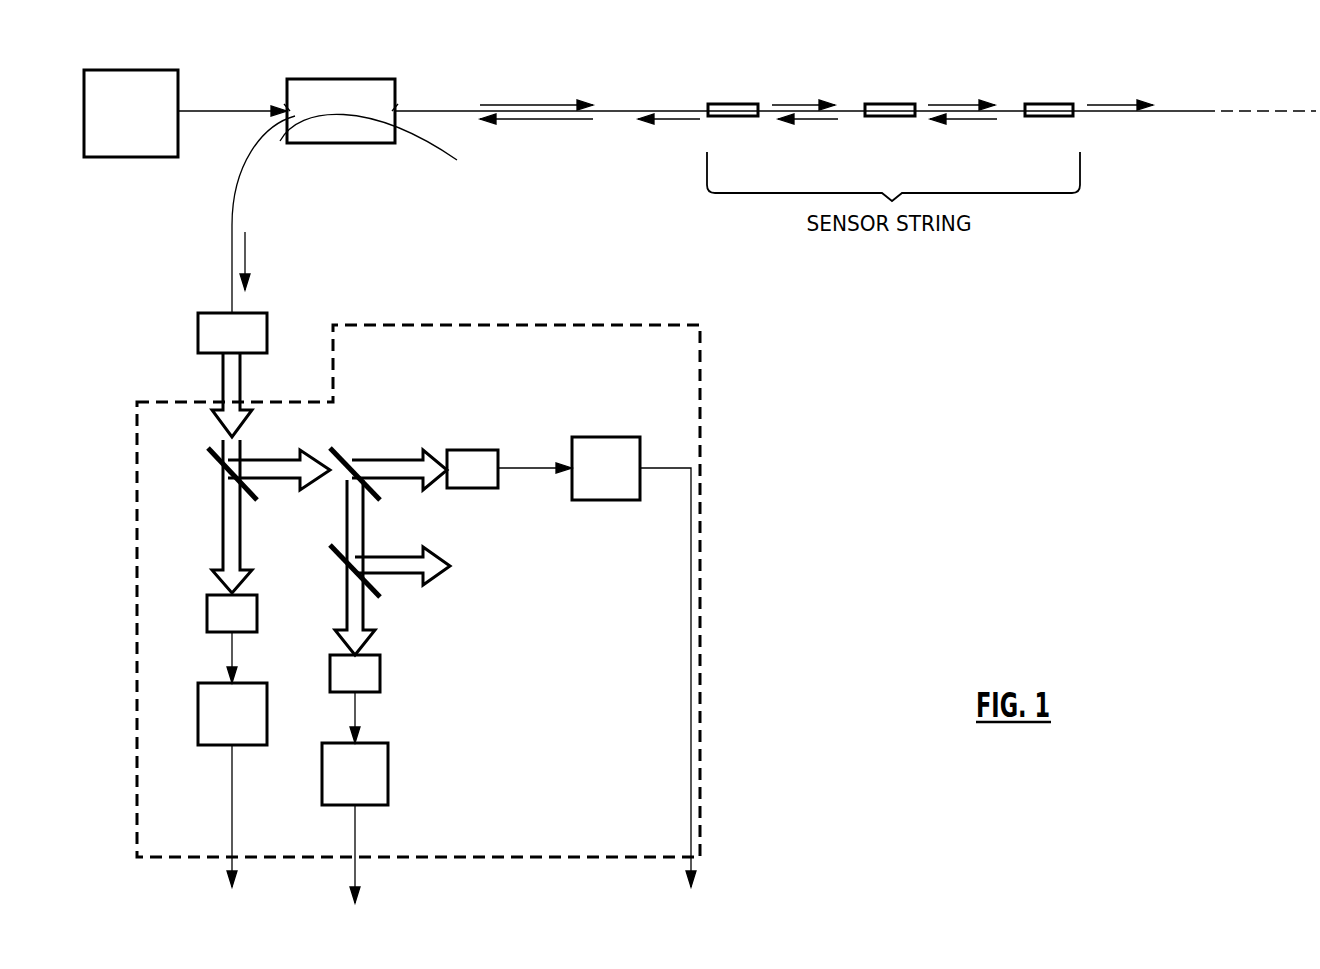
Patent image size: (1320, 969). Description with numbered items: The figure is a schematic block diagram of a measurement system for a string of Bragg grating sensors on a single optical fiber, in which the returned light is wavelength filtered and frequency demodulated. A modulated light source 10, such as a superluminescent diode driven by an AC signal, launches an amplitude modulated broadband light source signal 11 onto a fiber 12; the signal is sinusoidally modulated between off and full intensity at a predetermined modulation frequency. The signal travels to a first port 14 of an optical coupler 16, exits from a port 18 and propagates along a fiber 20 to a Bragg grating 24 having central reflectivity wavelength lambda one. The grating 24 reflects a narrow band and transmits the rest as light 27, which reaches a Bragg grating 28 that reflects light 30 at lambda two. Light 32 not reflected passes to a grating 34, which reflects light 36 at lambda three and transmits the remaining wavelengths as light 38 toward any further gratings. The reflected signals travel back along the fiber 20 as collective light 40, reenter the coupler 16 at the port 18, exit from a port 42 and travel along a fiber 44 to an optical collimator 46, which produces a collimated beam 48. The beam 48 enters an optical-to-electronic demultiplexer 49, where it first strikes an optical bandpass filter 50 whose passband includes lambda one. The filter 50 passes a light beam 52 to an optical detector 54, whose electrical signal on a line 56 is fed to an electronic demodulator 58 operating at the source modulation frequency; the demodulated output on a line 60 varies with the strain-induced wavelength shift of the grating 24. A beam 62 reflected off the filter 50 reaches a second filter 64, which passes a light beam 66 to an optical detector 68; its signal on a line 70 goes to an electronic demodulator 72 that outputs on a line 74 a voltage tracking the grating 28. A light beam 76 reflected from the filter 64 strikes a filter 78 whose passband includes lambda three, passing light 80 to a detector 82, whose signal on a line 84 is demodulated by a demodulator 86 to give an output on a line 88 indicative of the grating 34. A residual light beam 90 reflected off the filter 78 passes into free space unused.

The modulated light source 10 is at (132, 158).
The modulated broadband light source signal 11 is at (528, 104).
The optical fiber 12 is at (239, 108).
The first port 14 is at (287, 108).
The optical coupler 16 is at (364, 144).
The port 18 is at (397, 109).
The fiber 20 is at (423, 110).
The Bragg grating 24 is at (746, 104).
The transmitted light 27 is at (794, 104).
The Bragg grating 28 is at (890, 104).
The reflected light 30 is at (822, 121).
The transmitted light 32 is at (953, 104).
The Bragg grating 34 is at (1053, 104).
The reflected light 36 is at (977, 121).
The transmitted light 38 is at (1113, 104).
The reflected light 40 is at (558, 121).
The port 42 is at (280, 137).
The fiber 44 is at (233, 208).
The optical collimator 46 is at (198, 338).
The collimated beam 48 is at (223, 391).
The optical-to-electronic demultiplexer 49 is at (478, 338).
The optical bandpass filter 50 is at (210, 452).
The collimated light beam 52 is at (222, 538).
The optical detector 54 is at (207, 602).
The line 56 is at (231, 659).
The electronic demodulator 58 is at (208, 746).
The line 60 is at (232, 820).
The beam 62 is at (300, 458).
The second filter 64 is at (336, 450).
The light beam 66 is at (683, 121).
The optical detector 68 is at (477, 450).
The line 70 is at (530, 469).
The electronic demodulator 72 is at (612, 437).
The line 74 is at (663, 470).
The light beam 76 is at (347, 528).
The filter 78 is at (330, 549).
The light 80 is at (362, 621).
The detector 82 is at (330, 663).
The line 84 is at (352, 717).
The demodulator 86 is at (330, 807).
The line 88 is at (357, 852).
The residual light beam 90 is at (415, 557).